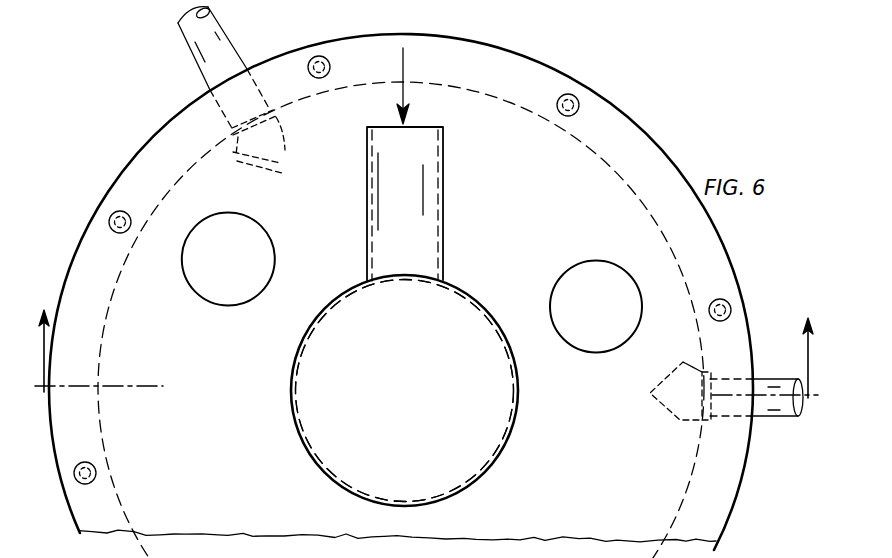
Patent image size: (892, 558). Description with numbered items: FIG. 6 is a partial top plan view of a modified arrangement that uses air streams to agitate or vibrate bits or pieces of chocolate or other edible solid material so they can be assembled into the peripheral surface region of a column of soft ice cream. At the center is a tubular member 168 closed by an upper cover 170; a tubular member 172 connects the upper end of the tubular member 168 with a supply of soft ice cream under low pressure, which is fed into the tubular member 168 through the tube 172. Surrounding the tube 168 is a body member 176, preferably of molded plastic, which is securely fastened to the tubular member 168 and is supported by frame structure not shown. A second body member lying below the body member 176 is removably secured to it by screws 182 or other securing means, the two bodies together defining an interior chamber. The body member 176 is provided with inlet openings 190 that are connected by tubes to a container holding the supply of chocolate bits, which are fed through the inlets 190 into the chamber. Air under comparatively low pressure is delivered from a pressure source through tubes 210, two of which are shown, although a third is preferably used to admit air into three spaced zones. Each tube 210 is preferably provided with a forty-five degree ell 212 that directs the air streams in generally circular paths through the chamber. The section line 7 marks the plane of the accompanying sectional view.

The body member 176 is at (632, 130).
The screws 182 is at (731, 283).
The inlet openings 190 is at (233, 275).
The tubular member 168 is at (468, 303).
The upper cover 170 is at (412, 345).
The tubular member 172 is at (443, 158).
The tubes 210 is at (223, 27).
The 45° ell 212 is at (286, 145).
The section line 7- 7 is at (426, 338).